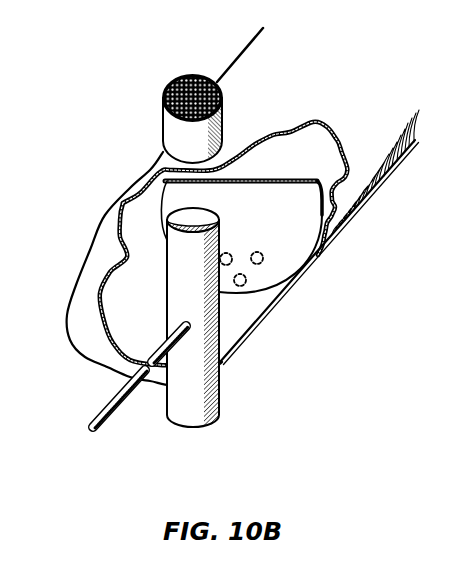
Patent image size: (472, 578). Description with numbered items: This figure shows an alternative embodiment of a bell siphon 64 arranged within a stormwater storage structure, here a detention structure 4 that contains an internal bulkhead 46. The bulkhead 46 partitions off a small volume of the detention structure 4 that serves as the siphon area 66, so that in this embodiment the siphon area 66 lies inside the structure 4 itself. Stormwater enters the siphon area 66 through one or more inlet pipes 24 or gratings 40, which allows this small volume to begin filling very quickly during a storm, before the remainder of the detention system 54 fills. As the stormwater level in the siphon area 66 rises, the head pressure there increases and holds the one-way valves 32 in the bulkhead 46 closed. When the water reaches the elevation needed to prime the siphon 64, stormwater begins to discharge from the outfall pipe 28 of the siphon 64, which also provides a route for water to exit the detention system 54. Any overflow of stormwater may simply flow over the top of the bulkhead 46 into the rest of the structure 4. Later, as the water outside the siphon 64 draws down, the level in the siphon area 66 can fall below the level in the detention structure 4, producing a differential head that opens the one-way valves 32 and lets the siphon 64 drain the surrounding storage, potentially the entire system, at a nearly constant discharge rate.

The detention structure 4 is at (257, 52).
The grating 40 is at (170, 83).
The inlet pipe 24 is at (168, 130).
The detention system 54 is at (330, 162).
The bulkhead 46 is at (287, 235).
The one-way valves 32 is at (232, 263).
The bell siphon 64 is at (195, 312).
The siphon area 66 is at (128, 306).
The outfall pipe 28 is at (110, 397).